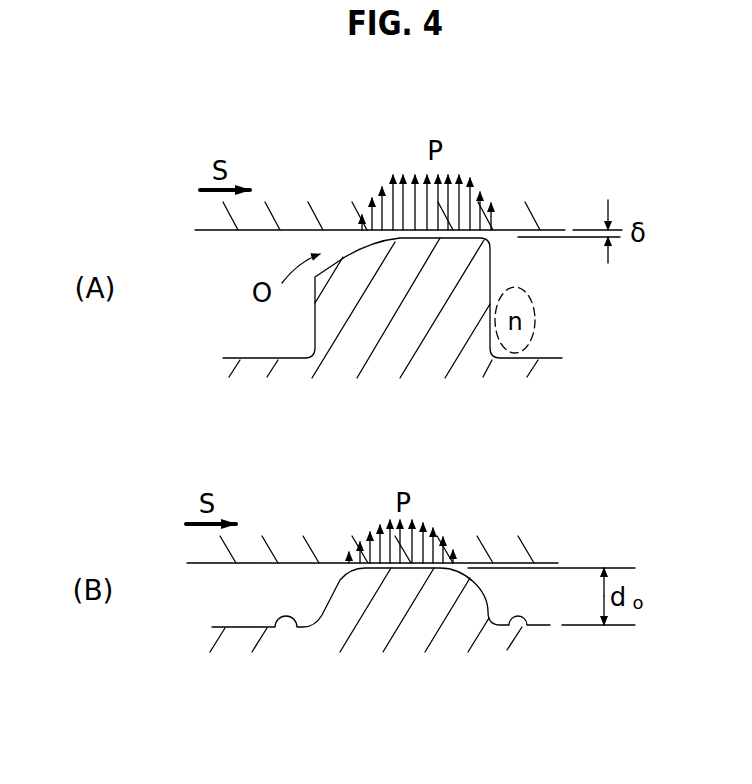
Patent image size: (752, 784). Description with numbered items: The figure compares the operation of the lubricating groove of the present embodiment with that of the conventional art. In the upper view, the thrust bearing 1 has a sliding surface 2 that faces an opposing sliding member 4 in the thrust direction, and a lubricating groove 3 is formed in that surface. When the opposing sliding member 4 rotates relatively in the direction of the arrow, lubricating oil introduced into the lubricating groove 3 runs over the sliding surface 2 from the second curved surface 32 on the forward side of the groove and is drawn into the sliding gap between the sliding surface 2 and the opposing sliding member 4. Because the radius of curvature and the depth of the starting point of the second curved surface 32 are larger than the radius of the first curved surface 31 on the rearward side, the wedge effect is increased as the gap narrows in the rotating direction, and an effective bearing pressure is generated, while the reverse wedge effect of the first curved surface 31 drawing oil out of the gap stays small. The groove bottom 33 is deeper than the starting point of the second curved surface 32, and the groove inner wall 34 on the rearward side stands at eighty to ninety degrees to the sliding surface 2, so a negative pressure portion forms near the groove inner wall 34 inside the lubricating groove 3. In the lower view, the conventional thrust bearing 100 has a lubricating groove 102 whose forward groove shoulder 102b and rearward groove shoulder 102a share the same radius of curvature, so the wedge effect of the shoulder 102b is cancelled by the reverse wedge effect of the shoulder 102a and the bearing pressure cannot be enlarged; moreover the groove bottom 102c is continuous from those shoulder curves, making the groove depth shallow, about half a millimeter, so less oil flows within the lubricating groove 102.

In FIG. 4A, the thrust bearing 1 is at (394, 364).
In FIG. 4A, the sliding surface 2 is at (428, 236).
In FIG. 4A, the lubricating groove 3 is at (240, 338).
In FIG. 4A, the opposing sliding member 4 is at (547, 207).
In FIG. 4A, the first curved surface 31 is at (488, 238).
In FIG. 4A, the second curved surface 32 is at (350, 253).
In FIG. 4A, the groove bottom 33 is at (548, 347).
In FIG. 4A, the groove inner wall 34 is at (492, 283).
In FIG. 4B, the thrust bearing 100 is at (410, 637).
In FIG. 4B, the lubricating groove 102 is at (253, 608).
In FIG. 4B, the groove shoulder 102a is at (478, 582).
In FIG. 4B, the groove shoulder 102b is at (328, 590).
In FIG. 4B, the groove bottom 102c is at (318, 621).